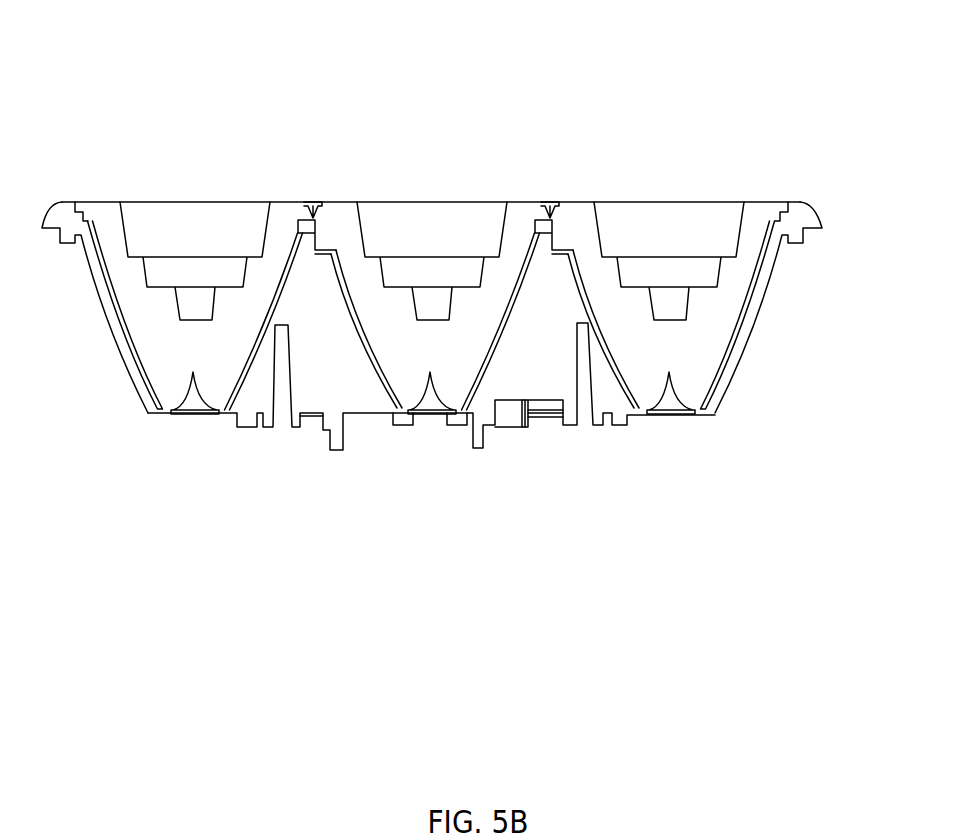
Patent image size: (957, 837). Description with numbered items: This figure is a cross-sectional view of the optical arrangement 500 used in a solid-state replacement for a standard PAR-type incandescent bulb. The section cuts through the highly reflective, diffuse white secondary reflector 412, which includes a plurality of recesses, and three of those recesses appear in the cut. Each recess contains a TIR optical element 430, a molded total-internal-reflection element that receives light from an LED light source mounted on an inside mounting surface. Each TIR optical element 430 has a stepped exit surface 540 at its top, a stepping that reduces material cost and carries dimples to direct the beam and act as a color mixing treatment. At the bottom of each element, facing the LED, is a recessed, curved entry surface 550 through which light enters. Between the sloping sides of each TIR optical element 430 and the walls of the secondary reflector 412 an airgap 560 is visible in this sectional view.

The optical arrangement 500 is at (438, 120).
The secondary reflector 412 is at (813, 210).
The TIR optical element 430 is at (173, 355).
The stepped exit surface 540 is at (165, 287).
The recessed, curved entry surface 550 is at (178, 404).
The airgap 560 is at (735, 343).